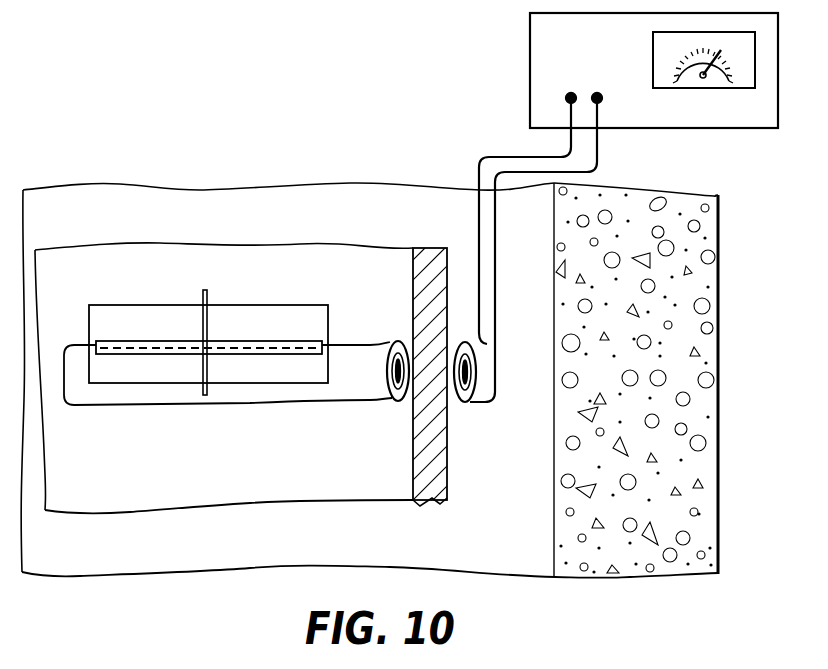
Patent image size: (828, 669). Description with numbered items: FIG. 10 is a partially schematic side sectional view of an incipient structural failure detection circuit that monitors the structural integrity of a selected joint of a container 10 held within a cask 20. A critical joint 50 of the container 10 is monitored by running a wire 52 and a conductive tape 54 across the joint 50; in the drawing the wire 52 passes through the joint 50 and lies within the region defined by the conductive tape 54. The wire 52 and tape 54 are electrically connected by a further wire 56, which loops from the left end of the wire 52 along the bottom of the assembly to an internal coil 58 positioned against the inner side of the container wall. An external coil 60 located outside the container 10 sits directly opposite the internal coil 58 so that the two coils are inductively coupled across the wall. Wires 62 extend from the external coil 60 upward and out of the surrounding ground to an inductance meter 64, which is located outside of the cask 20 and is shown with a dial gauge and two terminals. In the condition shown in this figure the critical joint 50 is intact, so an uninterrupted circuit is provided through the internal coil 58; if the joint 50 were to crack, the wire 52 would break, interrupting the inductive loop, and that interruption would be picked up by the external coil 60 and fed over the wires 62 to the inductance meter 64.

The container 10 is at (448, 490).
The cask 20 is at (706, 275).
The critical joint 50 is at (207, 297).
The wire 52 is at (136, 343).
The conductive tape 54 is at (295, 315).
The wire 56 is at (104, 410).
The internal coil 58 is at (404, 405).
The external coil 60 is at (462, 405).
The wires 62 is at (480, 165).
The inductance meter 64 is at (540, 70).